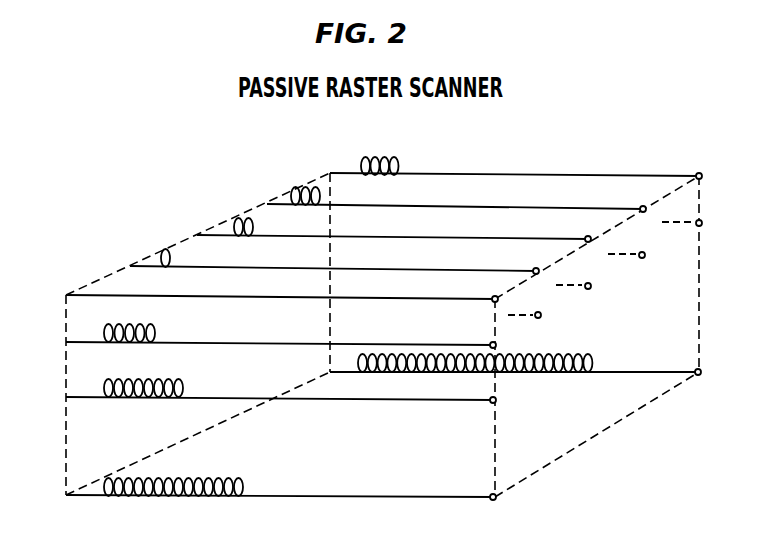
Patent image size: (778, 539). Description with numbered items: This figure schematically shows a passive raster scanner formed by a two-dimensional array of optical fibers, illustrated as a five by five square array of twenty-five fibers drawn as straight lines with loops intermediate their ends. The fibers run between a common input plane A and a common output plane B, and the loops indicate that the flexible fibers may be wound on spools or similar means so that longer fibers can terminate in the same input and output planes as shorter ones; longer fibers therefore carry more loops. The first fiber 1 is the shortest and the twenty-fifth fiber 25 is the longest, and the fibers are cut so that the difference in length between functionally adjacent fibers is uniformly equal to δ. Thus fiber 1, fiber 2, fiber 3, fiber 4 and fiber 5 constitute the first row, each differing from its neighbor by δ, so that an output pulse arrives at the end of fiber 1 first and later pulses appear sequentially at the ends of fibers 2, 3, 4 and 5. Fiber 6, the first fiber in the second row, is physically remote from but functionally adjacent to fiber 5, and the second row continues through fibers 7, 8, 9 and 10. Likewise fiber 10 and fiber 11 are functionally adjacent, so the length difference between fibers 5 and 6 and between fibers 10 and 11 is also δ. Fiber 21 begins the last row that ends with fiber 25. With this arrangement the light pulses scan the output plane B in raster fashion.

The optical fiber 1 is at (291, 300).
The optical fiber 2 is at (344, 267).
The optical fiber 3 is at (404, 235).
The optical fiber 4 is at (465, 205).
The optical fiber 5 is at (526, 173).
The optical fiber 6 is at (289, 336).
The optical fiber 7 is at (534, 316).
The optical fiber 8 is at (584, 286).
The optical fiber 9 is at (634, 256).
The optical fiber 10 is at (693, 223).
The optical fiber 11 is at (292, 396).
The optical fiber 21 is at (291, 500).
The optical fiber 25 is at (529, 370).
The input plane A is at (90, 434).
The output plane B is at (557, 443).